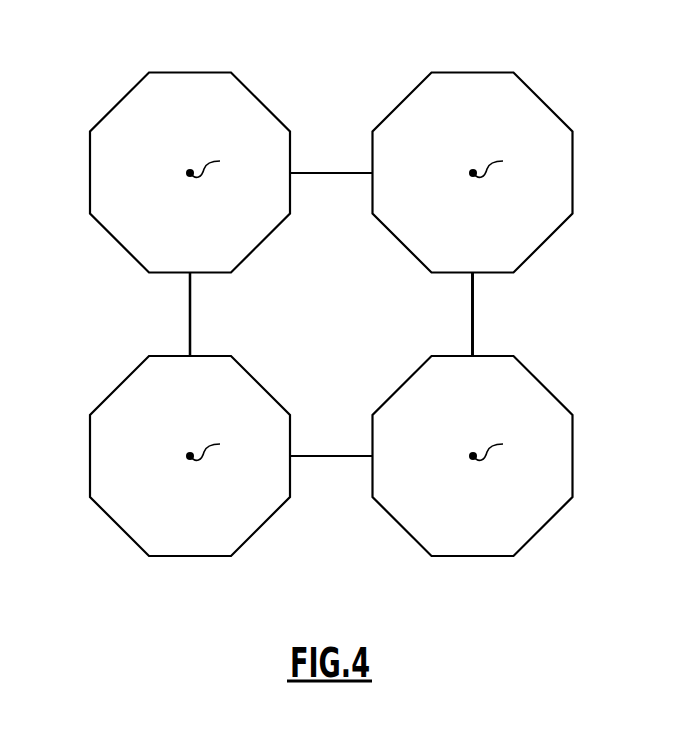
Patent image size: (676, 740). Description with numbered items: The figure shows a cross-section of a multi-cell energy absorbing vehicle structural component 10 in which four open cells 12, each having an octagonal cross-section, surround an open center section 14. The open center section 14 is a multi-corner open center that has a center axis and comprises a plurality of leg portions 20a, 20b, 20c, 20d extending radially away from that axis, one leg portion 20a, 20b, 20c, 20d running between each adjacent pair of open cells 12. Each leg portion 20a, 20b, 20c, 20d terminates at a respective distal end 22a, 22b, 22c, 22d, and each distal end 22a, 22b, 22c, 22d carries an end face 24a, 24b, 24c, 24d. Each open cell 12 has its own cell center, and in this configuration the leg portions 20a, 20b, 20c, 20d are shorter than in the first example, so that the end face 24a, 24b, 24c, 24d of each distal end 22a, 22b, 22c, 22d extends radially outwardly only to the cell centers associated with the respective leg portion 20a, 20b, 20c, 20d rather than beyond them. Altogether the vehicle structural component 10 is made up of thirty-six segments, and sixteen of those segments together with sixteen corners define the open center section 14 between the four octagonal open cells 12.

The vehicle structural component 10 is at (324, 311).
The open cell 12 is at (213, 105).
The open center section 14 is at (448, 307).
The leg portion 20a is at (308, 193).
The leg portion 20b is at (460, 345).
The leg portion 20c is at (307, 442).
The leg portion 20d is at (208, 288).
The distal end 22a is at (358, 177).
The distal end 22b is at (473, 333).
The distal end 22c is at (342, 455).
The distal end 22d is at (190, 343).
The end face 24a is at (298, 173).
The end face 24b is at (475, 287).
The end face 24c is at (358, 457).
The end face 24d is at (190, 298).